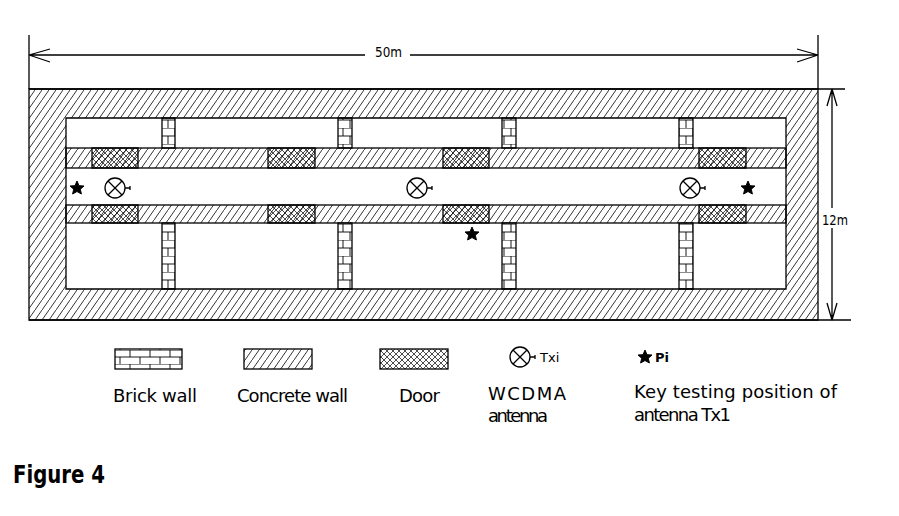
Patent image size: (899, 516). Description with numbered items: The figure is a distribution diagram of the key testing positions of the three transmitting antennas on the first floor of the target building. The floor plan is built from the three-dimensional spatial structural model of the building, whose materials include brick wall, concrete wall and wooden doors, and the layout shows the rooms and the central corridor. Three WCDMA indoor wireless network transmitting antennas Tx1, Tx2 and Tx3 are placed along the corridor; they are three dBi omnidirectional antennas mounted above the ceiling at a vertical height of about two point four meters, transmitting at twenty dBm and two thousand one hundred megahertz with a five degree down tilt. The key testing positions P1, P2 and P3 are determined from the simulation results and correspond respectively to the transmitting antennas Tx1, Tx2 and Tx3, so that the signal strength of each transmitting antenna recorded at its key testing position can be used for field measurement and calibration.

The transmitting antenna Tx1 is at (133, 188).
The transmitting antenna Tx2 is at (435, 188).
The transmitting antenna Tx3 is at (708, 188).
The key testing position P1 is at (88, 188).
The key testing position P2 is at (484, 234).
The key testing position P3 is at (761, 188).